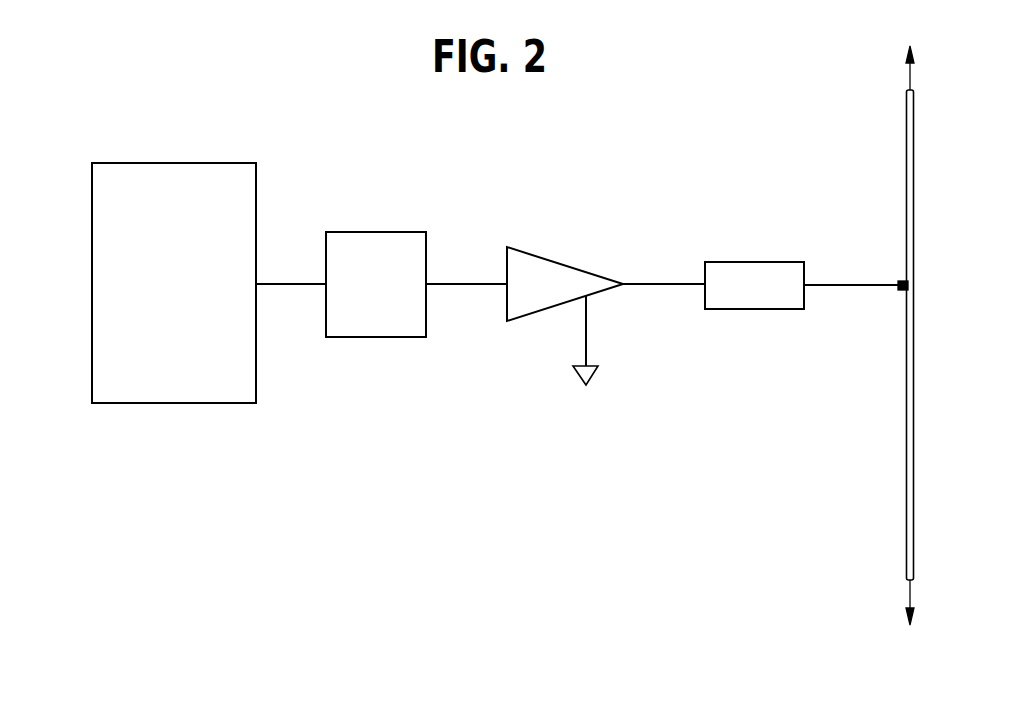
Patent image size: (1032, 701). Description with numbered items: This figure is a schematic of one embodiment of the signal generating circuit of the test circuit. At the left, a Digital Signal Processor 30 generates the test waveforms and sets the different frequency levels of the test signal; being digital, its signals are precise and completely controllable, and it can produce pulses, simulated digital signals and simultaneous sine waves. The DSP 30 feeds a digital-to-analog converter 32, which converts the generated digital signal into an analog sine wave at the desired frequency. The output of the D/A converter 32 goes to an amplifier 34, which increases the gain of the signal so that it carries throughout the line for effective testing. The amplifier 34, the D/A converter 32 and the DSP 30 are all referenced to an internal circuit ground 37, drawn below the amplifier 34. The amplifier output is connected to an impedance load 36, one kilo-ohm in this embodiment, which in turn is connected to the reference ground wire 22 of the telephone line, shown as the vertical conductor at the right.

The ground 22 is at (907, 213).
The Digital Signal Processor 30 is at (165, 163).
The digital-to-analog converter 32 is at (363, 232).
The amplifier 34 is at (547, 255).
The impedance load 36 is at (736, 262).
The internal circuit ground 37 is at (587, 342).